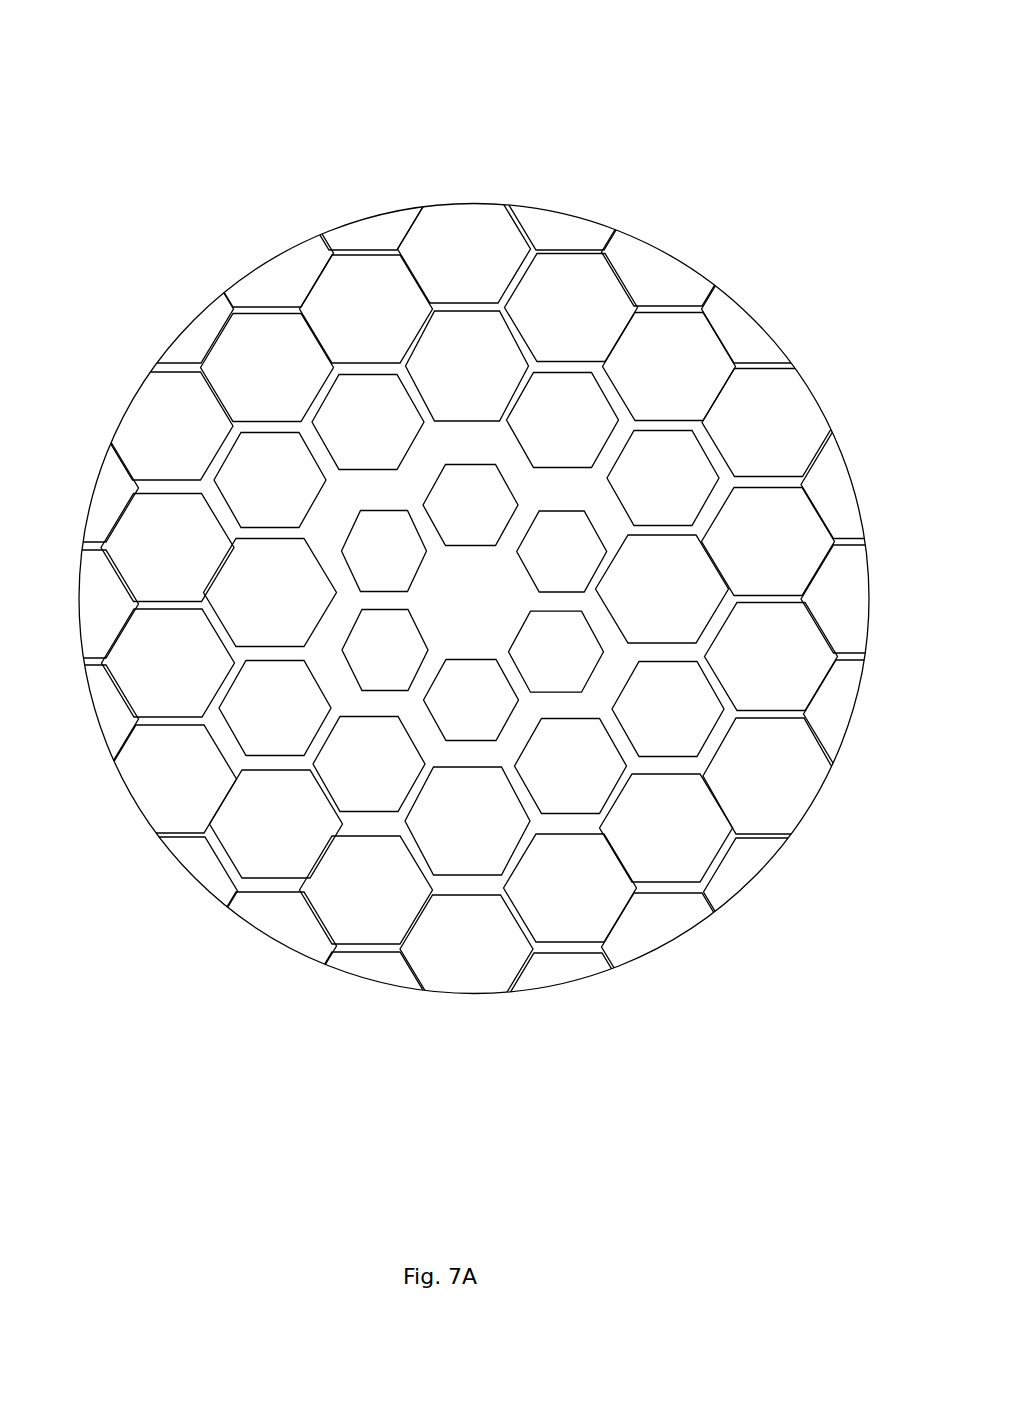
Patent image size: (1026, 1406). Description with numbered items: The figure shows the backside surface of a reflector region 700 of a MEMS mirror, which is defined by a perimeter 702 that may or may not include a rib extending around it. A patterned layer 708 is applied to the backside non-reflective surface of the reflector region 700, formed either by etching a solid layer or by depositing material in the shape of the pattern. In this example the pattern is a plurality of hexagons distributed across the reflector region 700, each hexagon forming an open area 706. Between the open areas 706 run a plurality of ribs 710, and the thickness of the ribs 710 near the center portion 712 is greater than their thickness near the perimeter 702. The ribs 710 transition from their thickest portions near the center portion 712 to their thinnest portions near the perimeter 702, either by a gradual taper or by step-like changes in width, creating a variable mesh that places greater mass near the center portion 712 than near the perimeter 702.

The reflector region 700 is at (152, 63).
The perimeter 702 is at (191, 317).
The open area 706 is at (387, 278).
The patterned layer 708 is at (535, 457).
The ribs 710 is at (415, 463).
The center portion 712 is at (471, 598).